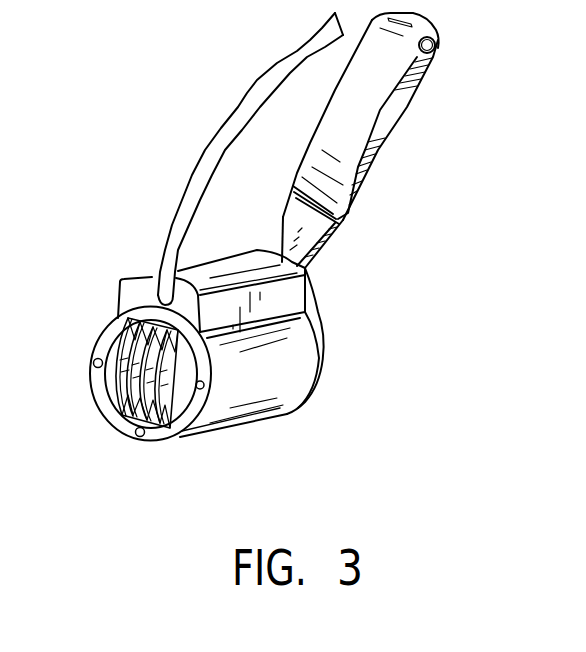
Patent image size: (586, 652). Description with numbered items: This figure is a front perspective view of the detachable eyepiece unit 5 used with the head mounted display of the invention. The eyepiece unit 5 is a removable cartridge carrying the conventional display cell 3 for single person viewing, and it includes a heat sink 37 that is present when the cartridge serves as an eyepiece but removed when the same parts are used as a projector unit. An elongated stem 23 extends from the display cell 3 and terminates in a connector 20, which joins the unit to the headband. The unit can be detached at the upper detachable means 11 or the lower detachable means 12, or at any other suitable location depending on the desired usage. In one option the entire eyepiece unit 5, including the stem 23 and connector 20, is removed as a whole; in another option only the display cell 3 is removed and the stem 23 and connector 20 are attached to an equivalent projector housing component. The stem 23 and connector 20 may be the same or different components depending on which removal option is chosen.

The display cell 3 is at (326, 357).
The eyepiece unit 5 is at (386, 254).
The upper detachable means 11 is at (417, 19).
The lower detachable means 12 is at (306, 268).
The connector 20 is at (259, 86).
The stem 23 is at (388, 143).
The heat sink 37 is at (174, 424).